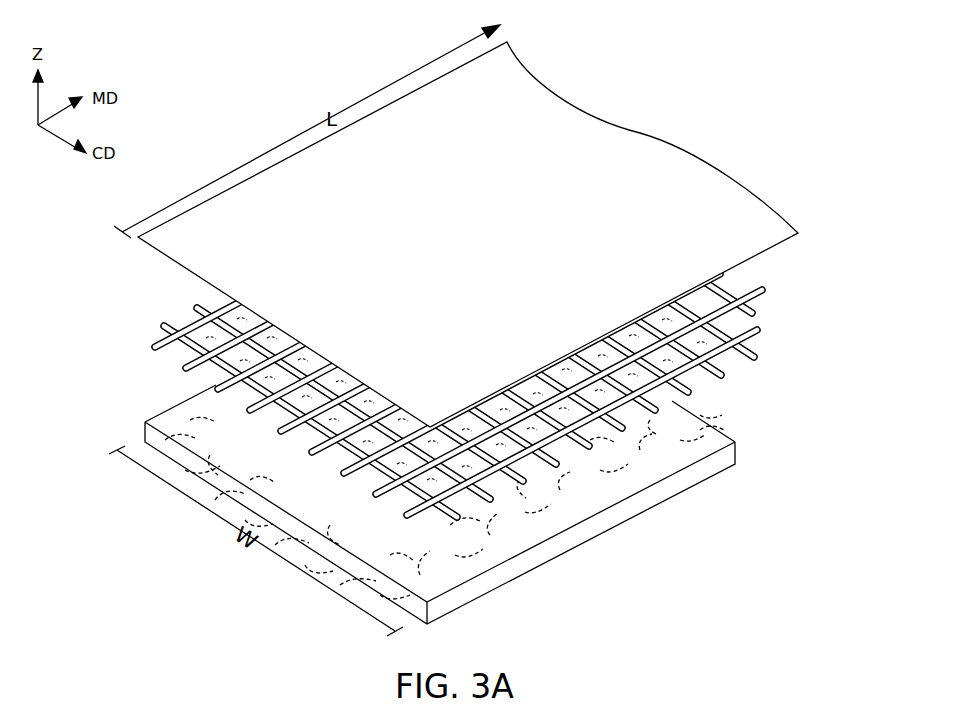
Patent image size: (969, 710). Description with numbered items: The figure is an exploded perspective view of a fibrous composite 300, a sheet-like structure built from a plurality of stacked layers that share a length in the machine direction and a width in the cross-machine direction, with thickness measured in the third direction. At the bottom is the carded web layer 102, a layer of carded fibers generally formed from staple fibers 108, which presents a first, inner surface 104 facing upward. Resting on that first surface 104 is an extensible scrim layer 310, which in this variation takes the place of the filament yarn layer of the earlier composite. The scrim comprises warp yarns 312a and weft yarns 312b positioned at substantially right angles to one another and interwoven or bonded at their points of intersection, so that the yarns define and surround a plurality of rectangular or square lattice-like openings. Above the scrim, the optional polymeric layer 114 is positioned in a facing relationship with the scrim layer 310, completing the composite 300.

The composite 300 is at (482, 333).
The carded web layer 102 is at (421, 504).
The first surface 104 is at (228, 418).
The staple fibers 108 is at (718, 436).
The polymeric layer 114 is at (112, 247).
The extensible scrim layer 310 is at (447, 332).
The warp yarns 312a is at (766, 289).
The weft yarns 312b is at (759, 355).